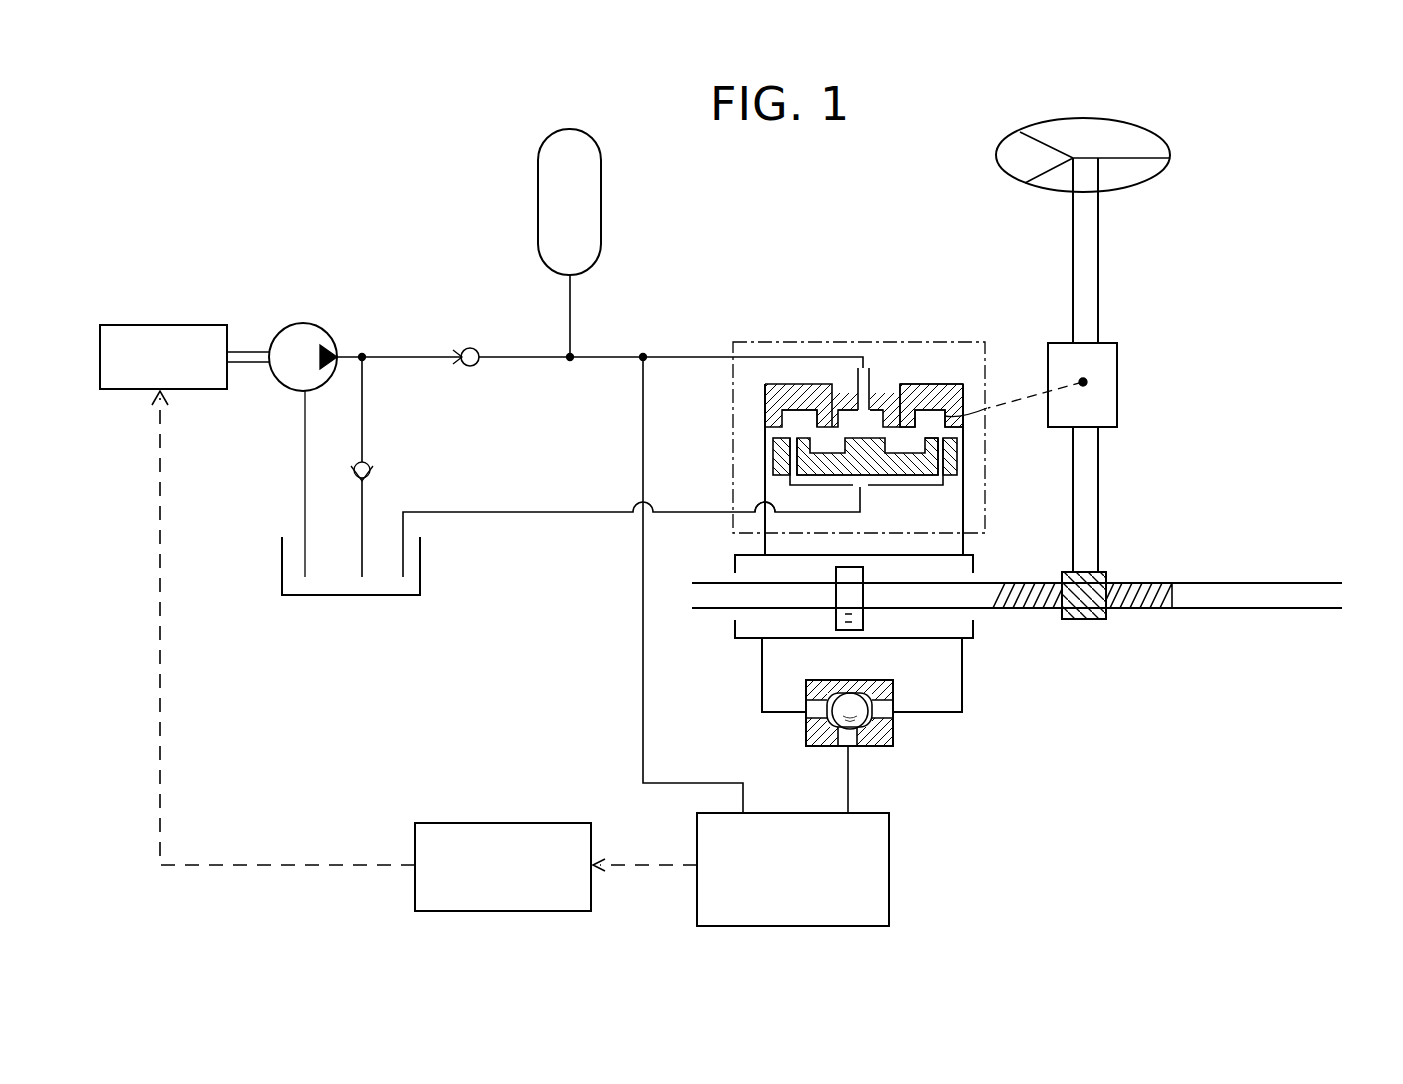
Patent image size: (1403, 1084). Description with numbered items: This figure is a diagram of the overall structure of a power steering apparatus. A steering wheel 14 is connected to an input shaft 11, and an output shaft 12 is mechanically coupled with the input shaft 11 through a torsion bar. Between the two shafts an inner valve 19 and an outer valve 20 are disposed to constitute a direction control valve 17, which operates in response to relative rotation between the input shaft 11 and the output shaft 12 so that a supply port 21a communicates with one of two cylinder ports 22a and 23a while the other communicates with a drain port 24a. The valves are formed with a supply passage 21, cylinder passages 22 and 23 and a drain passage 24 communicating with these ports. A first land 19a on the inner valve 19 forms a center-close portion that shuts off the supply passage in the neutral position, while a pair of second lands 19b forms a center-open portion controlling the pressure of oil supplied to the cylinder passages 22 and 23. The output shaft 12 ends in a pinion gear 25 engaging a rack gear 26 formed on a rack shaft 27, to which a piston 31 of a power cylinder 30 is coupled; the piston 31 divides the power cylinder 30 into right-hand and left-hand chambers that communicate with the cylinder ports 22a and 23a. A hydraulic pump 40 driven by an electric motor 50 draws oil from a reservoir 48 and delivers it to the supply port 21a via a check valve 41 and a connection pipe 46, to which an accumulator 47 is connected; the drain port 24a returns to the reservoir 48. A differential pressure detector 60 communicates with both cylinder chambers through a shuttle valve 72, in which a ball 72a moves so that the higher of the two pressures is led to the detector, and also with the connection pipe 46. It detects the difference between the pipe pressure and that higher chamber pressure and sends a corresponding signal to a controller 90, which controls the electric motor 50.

The input shaft 11 is at (1100, 300).
The output shaft 12 is at (1100, 462).
The steering wheel 14 is at (1150, 130).
The direction control valve 17 is at (733, 428).
The inner valve 19 is at (823, 470).
The first land 19a is at (945, 465).
The second lands 19b is at (778, 450).
The outer valve 20 is at (937, 393).
The supply passage 21 is at (873, 413).
The supply port 21a is at (733, 355).
The cylinder passage 22 is at (815, 413).
The cylinder port 22a is at (762, 538).
The cylinder passage 23 is at (987, 408).
The cylinder port 23a is at (968, 537).
The drain passage 24 is at (870, 495).
The drain port 24a is at (735, 513).
The pinion gear 25 is at (1087, 620).
The rack gear 26 is at (1163, 583).
The rack shaft 27 is at (1265, 590).
The power cylinder 30 is at (773, 620).
The piston 31 is at (851, 597).
The hydraulic pump 40 is at (310, 323).
The check valve 41 is at (470, 348).
The connection pipe 46 is at (621, 353).
The accumulator 47 is at (593, 185).
The reservoir 48 is at (420, 573).
The electric motor 50 is at (205, 323).
The differential pressure detector 60 is at (890, 863).
The shuttle valve 72 is at (912, 735).
The ball 72a is at (850, 705).
The controller 90 is at (510, 828).